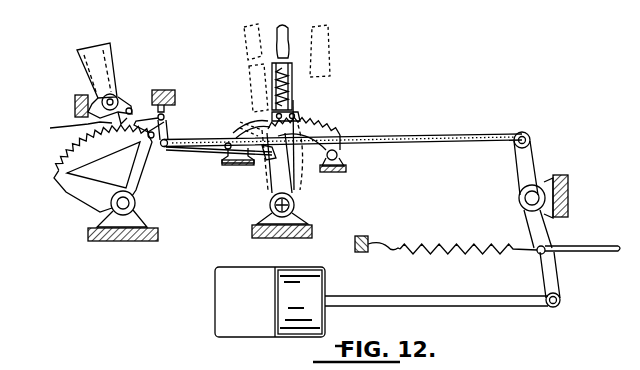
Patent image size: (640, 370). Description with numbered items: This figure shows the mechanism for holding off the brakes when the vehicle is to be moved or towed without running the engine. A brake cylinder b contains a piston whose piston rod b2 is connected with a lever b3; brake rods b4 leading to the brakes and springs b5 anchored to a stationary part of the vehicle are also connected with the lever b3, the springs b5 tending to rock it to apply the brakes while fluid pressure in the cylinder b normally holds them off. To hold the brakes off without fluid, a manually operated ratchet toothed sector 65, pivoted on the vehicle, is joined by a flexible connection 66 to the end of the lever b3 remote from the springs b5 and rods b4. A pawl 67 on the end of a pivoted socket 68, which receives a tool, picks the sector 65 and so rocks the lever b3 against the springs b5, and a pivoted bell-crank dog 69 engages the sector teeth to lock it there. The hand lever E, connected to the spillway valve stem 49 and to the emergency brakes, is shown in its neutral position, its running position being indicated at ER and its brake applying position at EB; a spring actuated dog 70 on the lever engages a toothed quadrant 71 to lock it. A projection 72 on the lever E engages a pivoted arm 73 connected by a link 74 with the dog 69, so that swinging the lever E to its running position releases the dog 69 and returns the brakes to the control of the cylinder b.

The socket 68 is at (82, 72).
The pawl 67 is at (70, 127).
The ratchet toothed sector 65 is at (56, 151).
The pivoted dog 69 is at (173, 128).
The flexible connection 66 is at (190, 146).
The spring actuated dog 70 is at (262, 124).
The toothed quadrant 71 is at (318, 128).
The link 74 is at (199, 150).
The pivoted arm 73 is at (268, 160).
The projection 72 is at (291, 146).
The valve stem 49 is at (294, 205).
The hand lever E is at (320, 28).
The running position of lever ER is at (243, 50).
The brake applying position of lever EB is at (328, 67).
The brake cylinder b is at (290, 337).
The piston rod b2 is at (445, 303).
The lever b3 is at (554, 279).
The brake rods b4 is at (583, 248).
The springs b5 is at (428, 245).